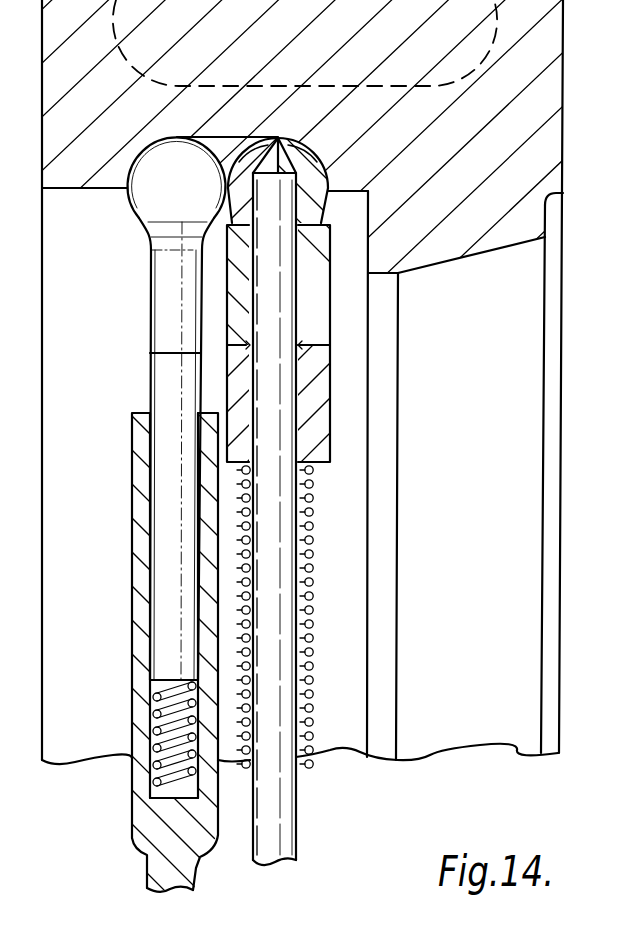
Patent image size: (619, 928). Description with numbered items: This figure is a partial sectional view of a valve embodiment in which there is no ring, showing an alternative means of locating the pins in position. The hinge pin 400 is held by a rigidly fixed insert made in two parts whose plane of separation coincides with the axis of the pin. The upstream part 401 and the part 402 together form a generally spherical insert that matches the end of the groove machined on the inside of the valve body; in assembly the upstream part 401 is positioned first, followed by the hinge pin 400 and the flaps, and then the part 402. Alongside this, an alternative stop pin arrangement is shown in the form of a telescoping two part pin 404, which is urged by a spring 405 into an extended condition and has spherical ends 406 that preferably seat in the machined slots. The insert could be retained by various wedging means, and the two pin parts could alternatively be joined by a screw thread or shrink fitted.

The hinge pin 400 is at (287, 832).
The upstream part 401 is at (302, 146).
The part 402 is at (258, 140).
The telescoping two part pin 404 is at (160, 758).
The spring 405 is at (160, 758).
The spherical ends 406 is at (150, 198).